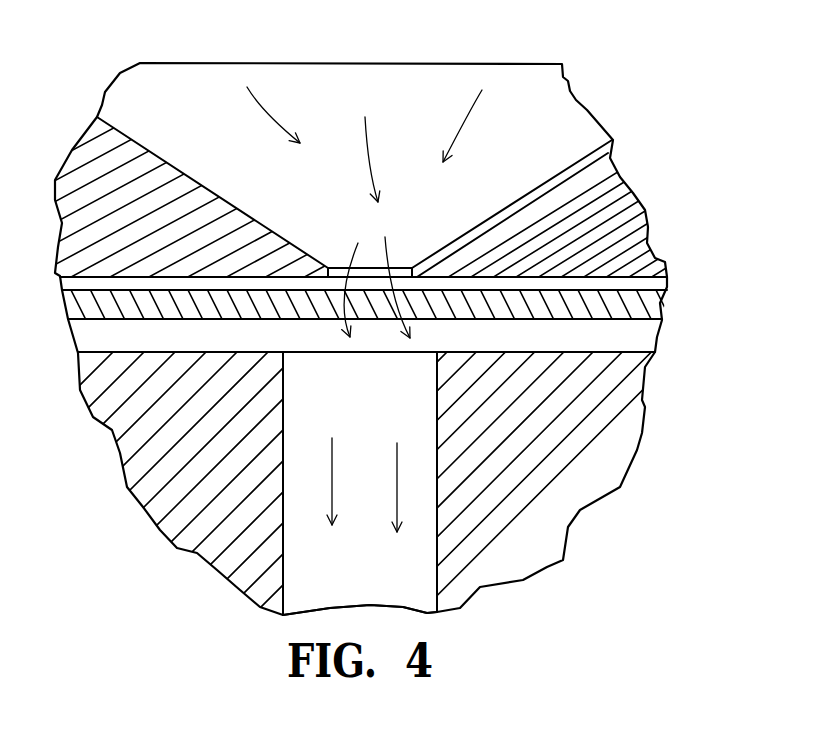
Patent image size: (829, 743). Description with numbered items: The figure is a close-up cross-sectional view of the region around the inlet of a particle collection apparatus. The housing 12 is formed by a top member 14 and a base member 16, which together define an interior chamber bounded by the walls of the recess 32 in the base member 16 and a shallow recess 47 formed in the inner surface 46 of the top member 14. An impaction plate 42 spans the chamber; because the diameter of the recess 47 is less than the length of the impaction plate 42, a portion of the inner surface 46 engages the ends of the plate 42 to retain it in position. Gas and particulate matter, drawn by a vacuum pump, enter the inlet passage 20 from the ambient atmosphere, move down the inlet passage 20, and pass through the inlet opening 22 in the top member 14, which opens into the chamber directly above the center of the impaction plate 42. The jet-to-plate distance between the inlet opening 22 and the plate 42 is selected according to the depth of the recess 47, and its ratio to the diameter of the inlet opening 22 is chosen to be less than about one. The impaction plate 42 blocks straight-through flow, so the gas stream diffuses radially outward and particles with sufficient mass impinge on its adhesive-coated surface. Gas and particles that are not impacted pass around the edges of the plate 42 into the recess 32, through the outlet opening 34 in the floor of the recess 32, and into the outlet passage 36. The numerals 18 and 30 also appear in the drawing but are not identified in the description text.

The housing 12 is at (60, 142).
The top member 14 is at (640, 213).
The base member 16 is at (135, 473).
The fluid inlet region 18 is at (427, 83).
The inlet passage 20 is at (550, 183).
The inlet opening 22 is at (329, 270).
The upper surface of lower body 30 is at (135, 352).
The recess 32 is at (628, 335).
The outlet opening 34 is at (430, 362).
The outlet passage 36 is at (420, 588).
The impaction plate 42 is at (660, 303).
The inner surface 46 is at (647, 283).
The recess 47 is at (83, 280).